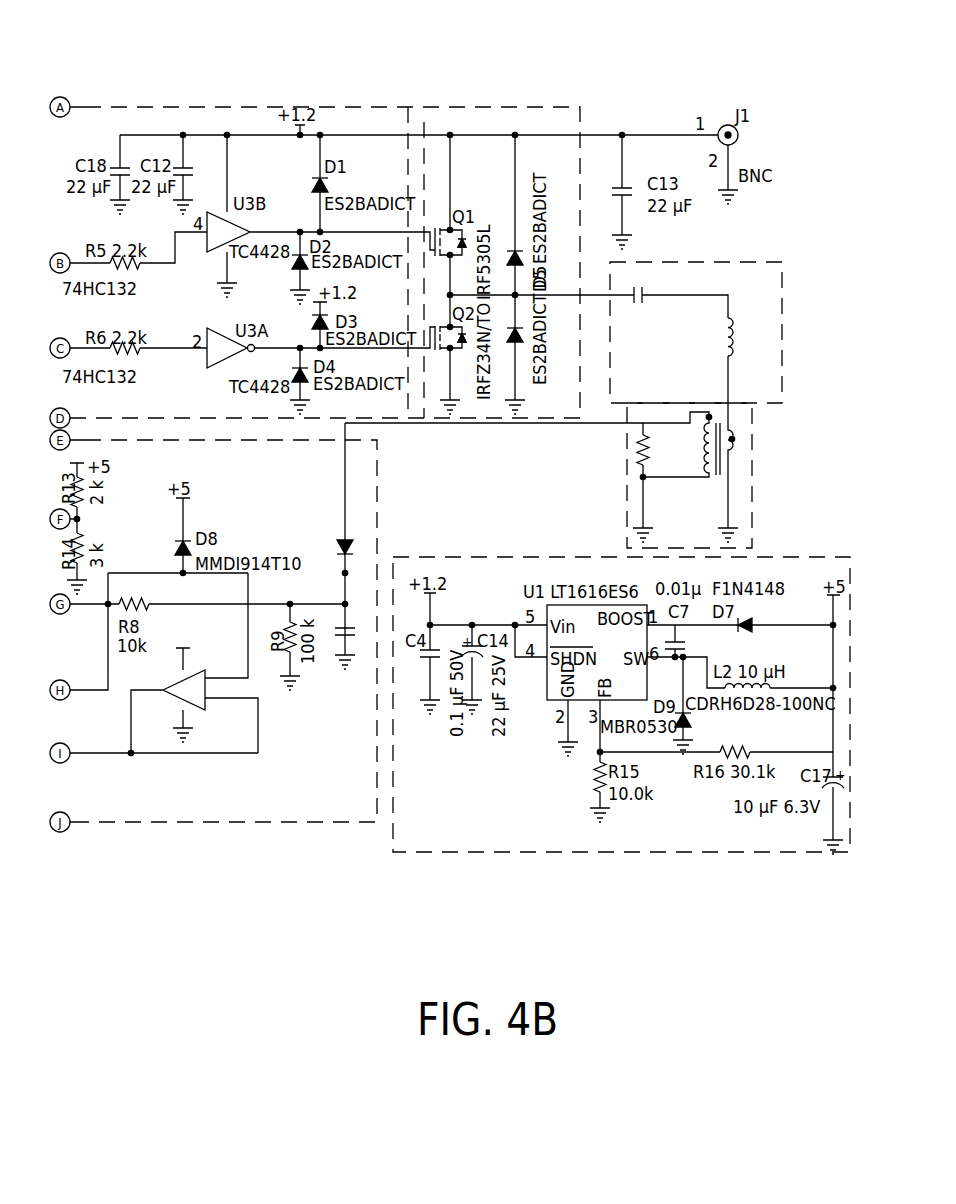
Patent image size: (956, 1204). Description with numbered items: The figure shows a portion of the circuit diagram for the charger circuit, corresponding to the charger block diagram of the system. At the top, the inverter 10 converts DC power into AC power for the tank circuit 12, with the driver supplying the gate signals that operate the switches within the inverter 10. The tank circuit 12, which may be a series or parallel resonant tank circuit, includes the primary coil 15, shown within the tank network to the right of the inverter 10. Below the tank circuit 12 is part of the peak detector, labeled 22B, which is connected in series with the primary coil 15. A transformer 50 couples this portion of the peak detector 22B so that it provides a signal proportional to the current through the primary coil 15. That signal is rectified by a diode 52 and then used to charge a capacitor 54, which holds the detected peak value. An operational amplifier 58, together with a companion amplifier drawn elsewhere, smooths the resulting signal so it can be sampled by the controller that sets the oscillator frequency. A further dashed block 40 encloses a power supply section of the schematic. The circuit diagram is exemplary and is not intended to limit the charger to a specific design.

The inverter 10 is at (478, 107).
The tank circuit 12 is at (750, 262).
The primary coil 15 is at (730, 358).
The transformer 50 is at (735, 440).
The peak detector 22B is at (625, 518).
The diode 52 is at (338, 547).
The capacitor 54 is at (350, 638).
The operational amplifier 58 is at (180, 692).
The power supply 40 is at (440, 852).